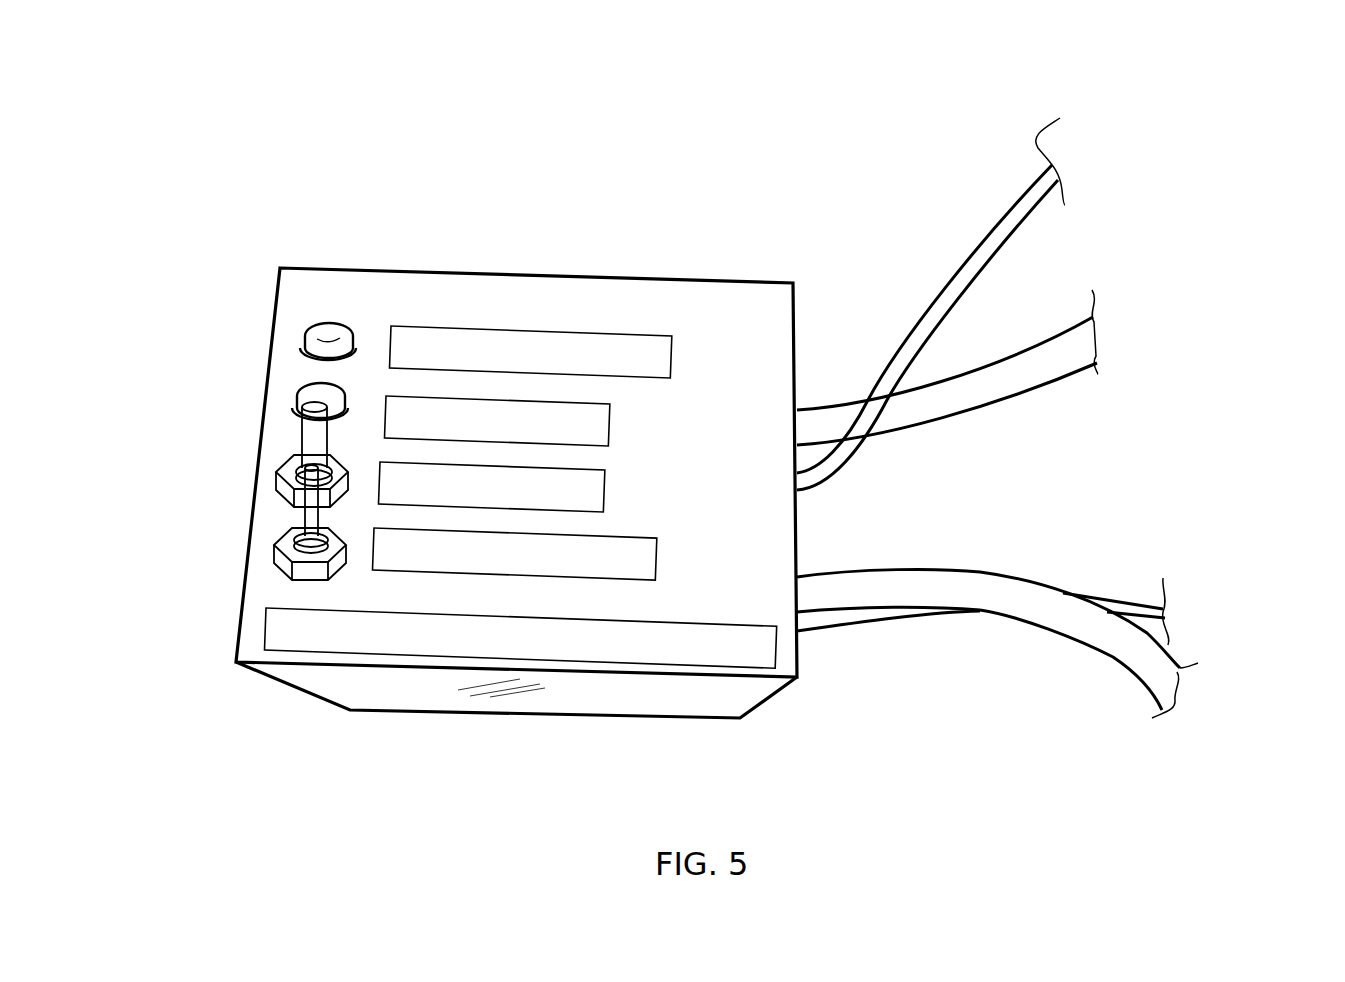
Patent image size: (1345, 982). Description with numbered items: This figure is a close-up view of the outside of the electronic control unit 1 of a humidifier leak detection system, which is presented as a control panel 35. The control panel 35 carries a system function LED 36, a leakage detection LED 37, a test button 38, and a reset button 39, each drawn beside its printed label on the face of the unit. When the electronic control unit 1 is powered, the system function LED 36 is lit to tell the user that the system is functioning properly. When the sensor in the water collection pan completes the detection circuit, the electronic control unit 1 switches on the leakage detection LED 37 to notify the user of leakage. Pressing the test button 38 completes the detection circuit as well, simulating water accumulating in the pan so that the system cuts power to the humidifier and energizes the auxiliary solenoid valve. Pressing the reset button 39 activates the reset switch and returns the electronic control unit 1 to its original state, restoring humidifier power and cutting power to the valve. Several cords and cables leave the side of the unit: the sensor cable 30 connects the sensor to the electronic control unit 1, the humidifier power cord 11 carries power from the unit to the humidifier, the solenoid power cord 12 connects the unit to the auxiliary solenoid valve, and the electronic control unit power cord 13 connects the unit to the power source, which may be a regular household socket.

The electronic control unit 1 is at (553, 238).
The humidifier power cord 11 is at (857, 423).
The solenoid power cord 12 is at (1136, 610).
The electronic control unit power cord 13 is at (896, 594).
The sensor cable 30 is at (986, 222).
The control panel 35 is at (676, 310).
The system function LED 36 is at (332, 330).
The leakage detection LED 37 is at (305, 405).
The test button 38 is at (312, 440).
The reset button 39 is at (312, 520).